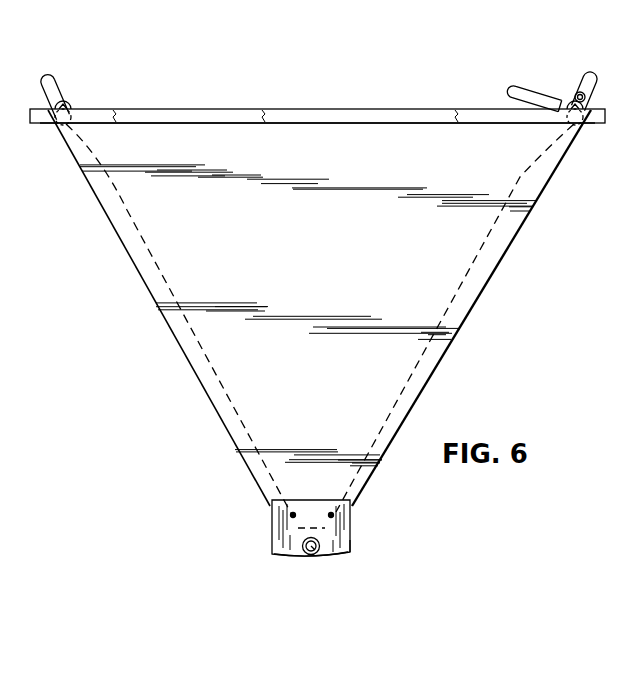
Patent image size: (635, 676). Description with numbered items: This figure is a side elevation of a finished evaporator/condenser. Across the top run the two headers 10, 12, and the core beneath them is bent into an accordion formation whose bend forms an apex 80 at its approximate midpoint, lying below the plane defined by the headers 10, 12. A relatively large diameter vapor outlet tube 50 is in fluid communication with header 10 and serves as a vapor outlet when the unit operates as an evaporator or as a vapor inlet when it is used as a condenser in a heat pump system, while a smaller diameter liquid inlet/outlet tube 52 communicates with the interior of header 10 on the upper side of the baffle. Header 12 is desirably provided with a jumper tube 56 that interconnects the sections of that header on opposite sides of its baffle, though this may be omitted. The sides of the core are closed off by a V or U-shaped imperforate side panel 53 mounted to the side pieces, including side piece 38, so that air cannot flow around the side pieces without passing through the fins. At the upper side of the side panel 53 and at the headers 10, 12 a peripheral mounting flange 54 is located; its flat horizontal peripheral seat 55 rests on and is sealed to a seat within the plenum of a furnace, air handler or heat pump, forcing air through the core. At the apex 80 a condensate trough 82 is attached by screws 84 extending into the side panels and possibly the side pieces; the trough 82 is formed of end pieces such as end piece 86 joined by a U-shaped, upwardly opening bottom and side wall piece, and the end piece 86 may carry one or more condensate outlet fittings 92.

The header 10 is at (580, 126).
The header 12 is at (68, 106).
The side piece 38 is at (470, 290).
The vapor outlet tube 50 is at (596, 82).
The liquid inlet/outlet tube 52 is at (534, 90).
The imperforate side panel 53 is at (155, 238).
The peripheral mounting flange 54 is at (235, 98).
The peripheral seat 55 is at (330, 124).
The jumper tube 56 is at (56, 83).
The apex 80 is at (291, 559).
The condensate trough 82 is at (351, 528).
The screws 84 is at (331, 513).
The end piece 86 is at (351, 550).
The condensate outlet fitting 92 is at (316, 556).